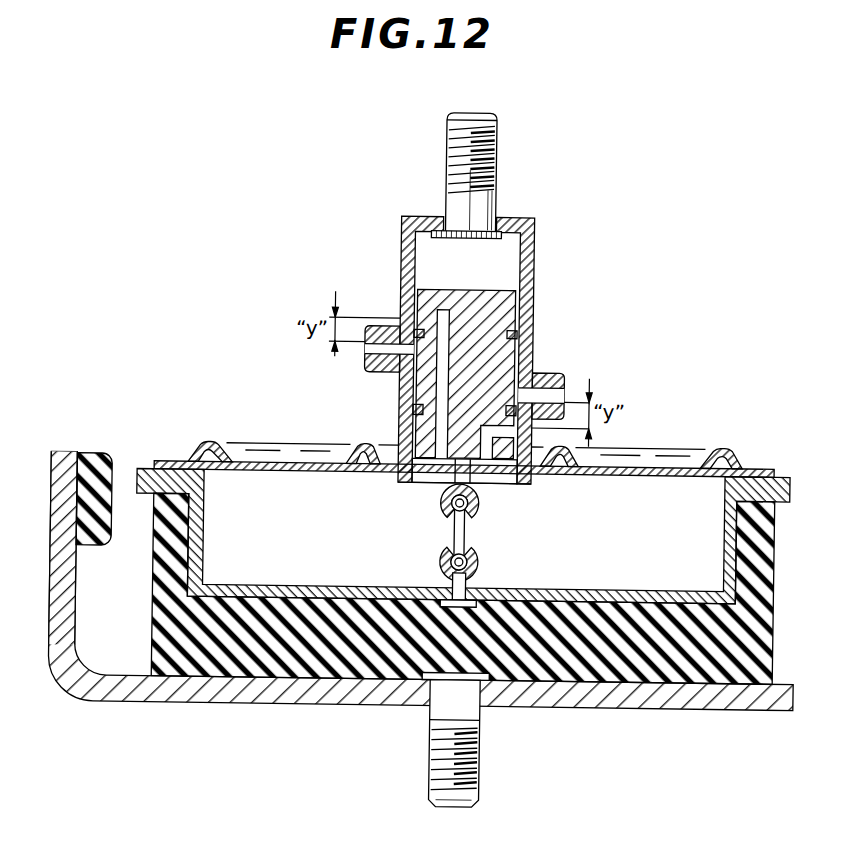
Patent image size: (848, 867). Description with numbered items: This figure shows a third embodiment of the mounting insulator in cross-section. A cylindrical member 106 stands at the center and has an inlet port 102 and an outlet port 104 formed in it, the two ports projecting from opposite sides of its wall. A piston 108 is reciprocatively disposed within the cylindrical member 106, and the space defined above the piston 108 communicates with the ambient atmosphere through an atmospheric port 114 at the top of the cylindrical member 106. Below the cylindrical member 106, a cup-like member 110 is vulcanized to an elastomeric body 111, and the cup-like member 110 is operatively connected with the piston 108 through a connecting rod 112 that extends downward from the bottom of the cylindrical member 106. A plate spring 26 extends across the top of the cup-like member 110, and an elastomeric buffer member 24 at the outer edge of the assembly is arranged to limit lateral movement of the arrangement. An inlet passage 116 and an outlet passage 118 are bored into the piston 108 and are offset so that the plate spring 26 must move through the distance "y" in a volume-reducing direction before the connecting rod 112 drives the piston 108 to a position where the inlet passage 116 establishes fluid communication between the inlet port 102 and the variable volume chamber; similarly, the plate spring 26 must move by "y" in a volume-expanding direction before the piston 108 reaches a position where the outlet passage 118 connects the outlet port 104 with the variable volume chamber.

The elastomeric buffer member 24 is at (101, 468).
The plate spring 26 is at (236, 453).
The inlet port 102 is at (558, 371).
The outlet port 104 is at (364, 366).
The cylindrical member 106 is at (403, 218).
The piston 108 is at (505, 314).
The cup-like member 110 is at (462, 580).
The elastomeric body 111 is at (570, 674).
The connecting rod 112 is at (466, 537).
The atmospheric port 114 is at (506, 219).
The inlet passage 116 is at (487, 460).
The outlet passage 118 is at (437, 433).